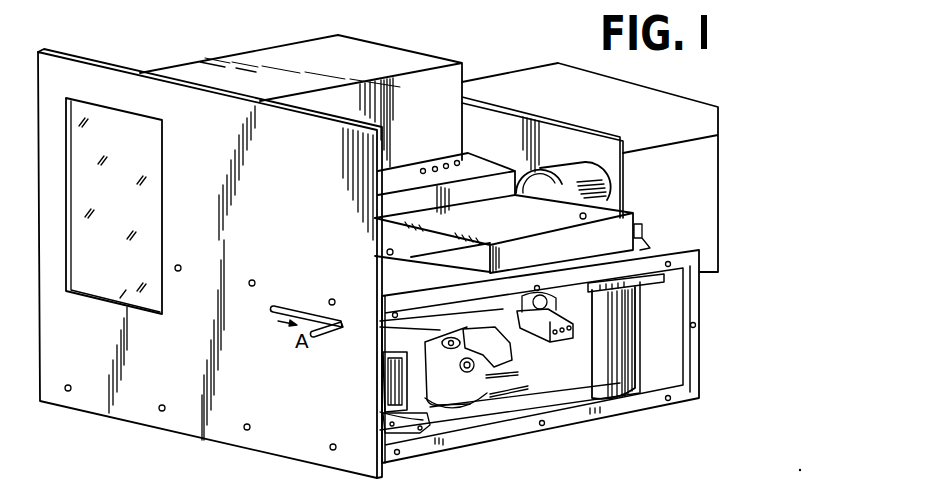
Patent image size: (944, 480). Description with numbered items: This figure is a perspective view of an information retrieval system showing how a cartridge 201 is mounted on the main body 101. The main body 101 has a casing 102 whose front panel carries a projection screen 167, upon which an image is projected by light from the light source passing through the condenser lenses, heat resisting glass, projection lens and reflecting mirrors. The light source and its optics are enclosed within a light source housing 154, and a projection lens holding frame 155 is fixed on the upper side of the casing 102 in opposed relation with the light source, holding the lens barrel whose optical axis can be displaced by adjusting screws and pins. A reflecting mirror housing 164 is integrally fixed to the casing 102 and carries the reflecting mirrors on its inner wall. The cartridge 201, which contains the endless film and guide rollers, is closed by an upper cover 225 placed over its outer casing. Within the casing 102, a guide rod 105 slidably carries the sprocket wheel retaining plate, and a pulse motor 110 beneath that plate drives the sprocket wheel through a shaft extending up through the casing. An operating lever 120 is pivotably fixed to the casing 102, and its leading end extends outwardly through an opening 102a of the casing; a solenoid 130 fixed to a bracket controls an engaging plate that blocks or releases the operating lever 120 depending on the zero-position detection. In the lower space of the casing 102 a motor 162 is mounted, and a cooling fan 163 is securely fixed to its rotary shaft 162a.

The main body 101 is at (463, 62).
The projection screen 167 is at (150, 151).
The reflecting mirror housing 164 is at (718, 203).
The light source housing 154 is at (495, 166).
The projection lens holding frame 155 is at (567, 166).
The cartridge 201 is at (640, 214).
The upper cover 225 is at (612, 206).
The casing 102 is at (702, 352).
The opening 102a is at (274, 317).
The operating lever 120 is at (325, 338).
The solenoid 130 is at (388, 388).
The guide rod 105 is at (652, 286).
The pulse motor 110 is at (637, 338).
The motor 162 is at (447, 405).
The rotary shaft 162a is at (448, 340).
The cooling fan 163 is at (496, 332).